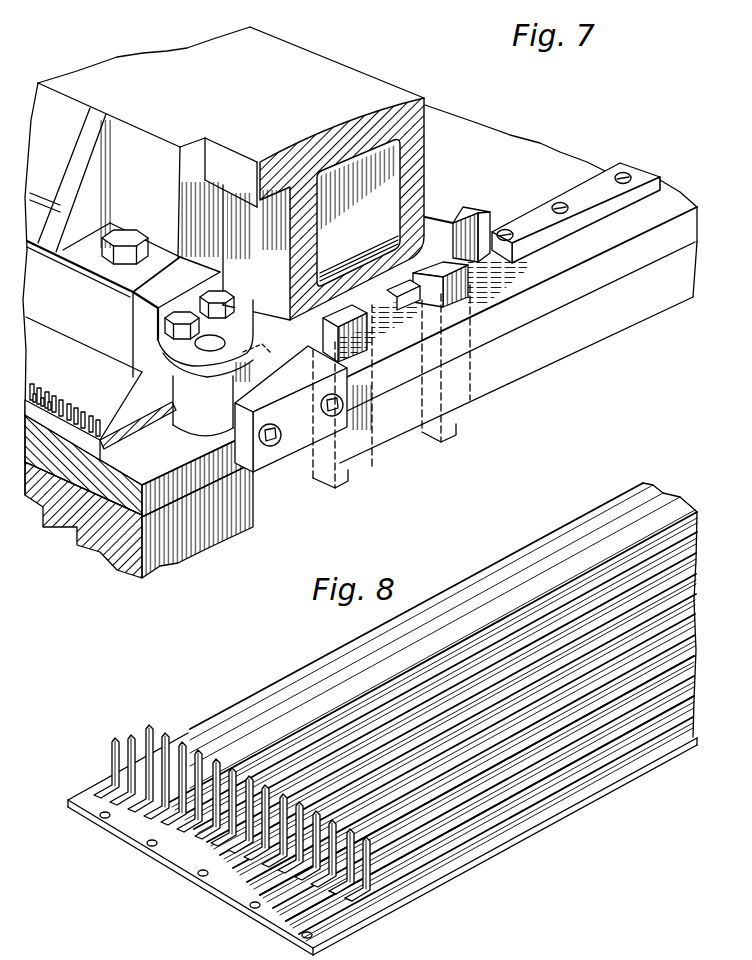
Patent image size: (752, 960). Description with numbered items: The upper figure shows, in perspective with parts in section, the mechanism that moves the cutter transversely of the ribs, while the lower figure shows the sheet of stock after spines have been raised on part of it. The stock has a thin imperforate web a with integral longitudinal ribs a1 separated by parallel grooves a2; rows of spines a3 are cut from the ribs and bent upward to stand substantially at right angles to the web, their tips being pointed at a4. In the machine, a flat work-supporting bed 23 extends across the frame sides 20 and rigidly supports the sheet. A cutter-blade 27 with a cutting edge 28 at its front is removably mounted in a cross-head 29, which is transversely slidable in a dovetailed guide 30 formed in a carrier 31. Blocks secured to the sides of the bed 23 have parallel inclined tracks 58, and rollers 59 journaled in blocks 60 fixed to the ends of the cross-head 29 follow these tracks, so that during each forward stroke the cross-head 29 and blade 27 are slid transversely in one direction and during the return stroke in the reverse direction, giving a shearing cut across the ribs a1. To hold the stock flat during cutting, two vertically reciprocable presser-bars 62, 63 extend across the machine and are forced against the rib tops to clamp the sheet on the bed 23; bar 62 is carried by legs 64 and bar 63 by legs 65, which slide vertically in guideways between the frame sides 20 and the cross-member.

In FIG. 7, the frame sides 20 is at (618, 323).
In FIG. 7, the work-supporting bed 23 is at (559, 155).
In FIG. 7, the cutter-blade 27 is at (54, 347).
In FIG. 7, the cutting edge 28 is at (82, 412).
In FIG. 7, the cross-head 29 is at (582, 190).
In FIG. 7, the dovetailed guide 30 is at (241, 298).
In FIG. 7, the carrier 31 is at (424, 165).
In FIG. 7, the inclined tracks 58 is at (259, 369).
In FIG. 7, the rollers 59 is at (192, 416).
In FIG. 7, the roller blocks 60 is at (133, 323).
In FIG. 7, the presser-bar 62 is at (460, 204).
In FIG. 7, the presser-bar 63 is at (372, 316).
In FIG. 7, the legs 64 is at (467, 416).
In FIG. 7, the legs 65 is at (362, 465).
In FIG. 7, the web a is at (138, 414).
In FIG. 8, the web a is at (523, 832).
In FIG. 8, the longitudinal ribs a1 is at (433, 860).
In FIG. 8, the grooves a2 is at (483, 795).
In FIG. 7, the spines a3 is at (33, 393).
In FIG. 8, the spines a3 is at (360, 878).
In FIG. 7, the pointed tips a4 is at (78, 406).
In FIG. 8, the pointed tips a4 is at (130, 733).